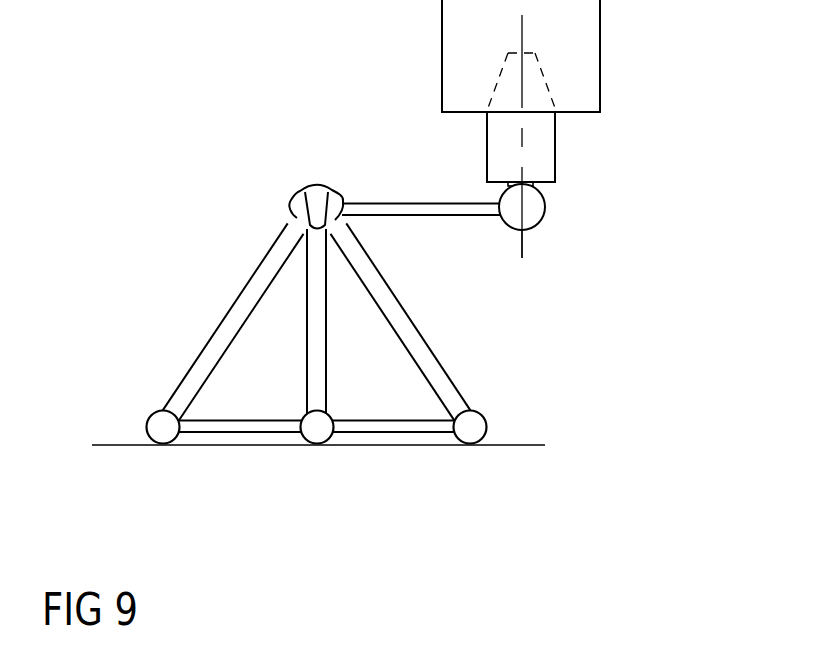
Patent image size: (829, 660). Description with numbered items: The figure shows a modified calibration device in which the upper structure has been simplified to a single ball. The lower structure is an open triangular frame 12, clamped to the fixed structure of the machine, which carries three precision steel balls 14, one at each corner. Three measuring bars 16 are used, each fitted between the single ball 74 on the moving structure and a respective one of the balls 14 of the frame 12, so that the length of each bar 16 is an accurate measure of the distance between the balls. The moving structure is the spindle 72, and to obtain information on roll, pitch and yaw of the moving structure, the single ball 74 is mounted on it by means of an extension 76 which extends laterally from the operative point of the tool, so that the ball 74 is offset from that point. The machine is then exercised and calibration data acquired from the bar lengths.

The lower triangular frame 12 is at (238, 425).
The precision steel balls 14 is at (158, 428).
The measuring bars 16 is at (212, 350).
The spindle 72 is at (585, 90).
The single ball 74 is at (313, 190).
The extension 76 is at (405, 208).